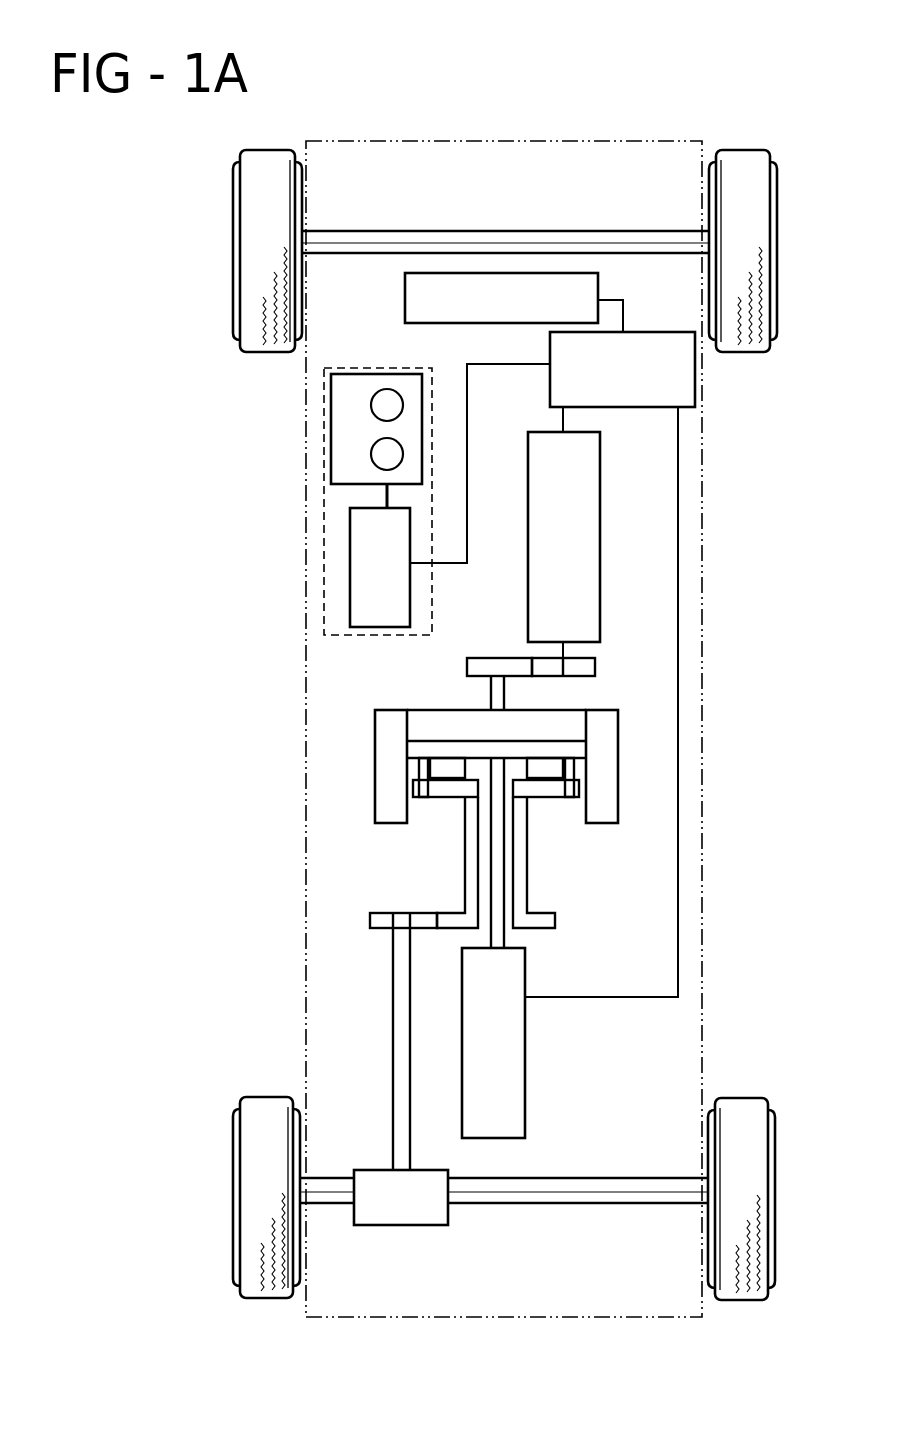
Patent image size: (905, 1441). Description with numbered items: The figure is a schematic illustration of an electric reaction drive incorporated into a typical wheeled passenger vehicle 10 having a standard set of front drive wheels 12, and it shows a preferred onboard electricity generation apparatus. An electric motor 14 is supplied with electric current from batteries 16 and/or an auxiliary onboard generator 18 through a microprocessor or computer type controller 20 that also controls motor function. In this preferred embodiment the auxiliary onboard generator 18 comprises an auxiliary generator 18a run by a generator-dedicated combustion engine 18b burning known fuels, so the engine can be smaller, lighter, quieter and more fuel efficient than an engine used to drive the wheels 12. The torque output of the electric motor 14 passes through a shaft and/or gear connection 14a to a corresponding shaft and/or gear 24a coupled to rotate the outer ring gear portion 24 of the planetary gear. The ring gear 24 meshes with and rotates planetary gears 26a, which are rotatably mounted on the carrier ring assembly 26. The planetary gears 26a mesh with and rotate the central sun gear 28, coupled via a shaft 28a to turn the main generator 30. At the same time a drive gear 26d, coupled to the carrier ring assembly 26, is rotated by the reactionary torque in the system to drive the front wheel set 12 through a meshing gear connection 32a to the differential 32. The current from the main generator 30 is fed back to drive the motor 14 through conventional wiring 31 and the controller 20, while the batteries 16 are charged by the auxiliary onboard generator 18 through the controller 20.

The wheeled passenger vehicle 10 is at (618, 140).
The front drive wheels 12 is at (637, 1195).
The electric motor 14 is at (600, 570).
The shaft and/or gear connection 14a is at (595, 672).
The batteries 16 is at (526, 273).
The auxiliary onboard generator 18 is at (324, 383).
The auxiliary generator 18a is at (350, 600).
The generator-dedicated combustion engine 18b is at (331, 432).
The controller 20 is at (697, 389).
The outer ring gear portion 24 is at (388, 775).
The shaft and/or gear 24a is at (463, 672).
The carrier ring assembly 26 is at (543, 790).
The planetary gears 26a is at (545, 765).
The drive gear 26d is at (447, 915).
The central sun gear 28 is at (472, 760).
The shaft 28a is at (497, 868).
The main generator 30 is at (525, 1068).
The wiring 31 is at (683, 952).
The differential 32 is at (400, 1225).
The meshing gear connection 32a is at (373, 918).